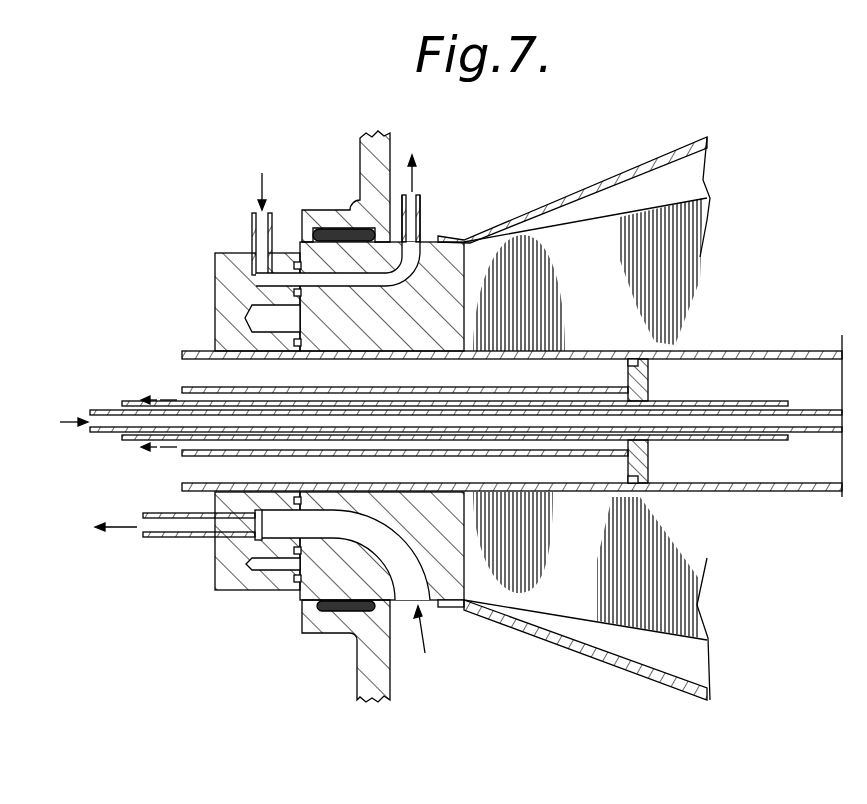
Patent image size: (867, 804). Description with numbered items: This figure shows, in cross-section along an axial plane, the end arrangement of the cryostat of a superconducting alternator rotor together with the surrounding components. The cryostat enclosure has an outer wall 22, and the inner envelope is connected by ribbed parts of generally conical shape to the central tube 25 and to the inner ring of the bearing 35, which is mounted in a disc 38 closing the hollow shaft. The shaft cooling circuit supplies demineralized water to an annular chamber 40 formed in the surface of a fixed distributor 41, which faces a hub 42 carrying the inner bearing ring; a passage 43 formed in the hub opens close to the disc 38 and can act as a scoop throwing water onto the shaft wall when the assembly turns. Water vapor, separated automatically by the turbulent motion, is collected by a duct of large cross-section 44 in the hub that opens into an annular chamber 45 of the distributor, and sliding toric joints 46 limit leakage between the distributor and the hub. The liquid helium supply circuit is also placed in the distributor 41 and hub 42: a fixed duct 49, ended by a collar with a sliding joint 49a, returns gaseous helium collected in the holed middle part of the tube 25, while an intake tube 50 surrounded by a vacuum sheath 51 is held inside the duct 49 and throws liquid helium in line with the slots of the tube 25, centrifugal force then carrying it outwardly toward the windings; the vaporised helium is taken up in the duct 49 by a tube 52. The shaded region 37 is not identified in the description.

The outer wall 22 is at (587, 192).
The tube 25 is at (757, 352).
The bearing 35 is at (347, 232).
The shaded region / ultrasonic field 37 is at (615, 265).
The disc 38 is at (372, 155).
The annular chamber 40 is at (260, 282).
The fixed distributor 41 is at (235, 258).
The hub 42 is at (505, 570).
The passage 43 is at (412, 232).
The duct of large cross-section 44 is at (412, 583).
The annular chamber 45 is at (268, 322).
The sliding toric joints 46 is at (298, 345).
The fixed duct 49 is at (515, 390).
The sliding joint 49a is at (638, 362).
The intake tube 50 is at (765, 434).
The sheath 51 is at (705, 403).
The tube 52 is at (225, 447).